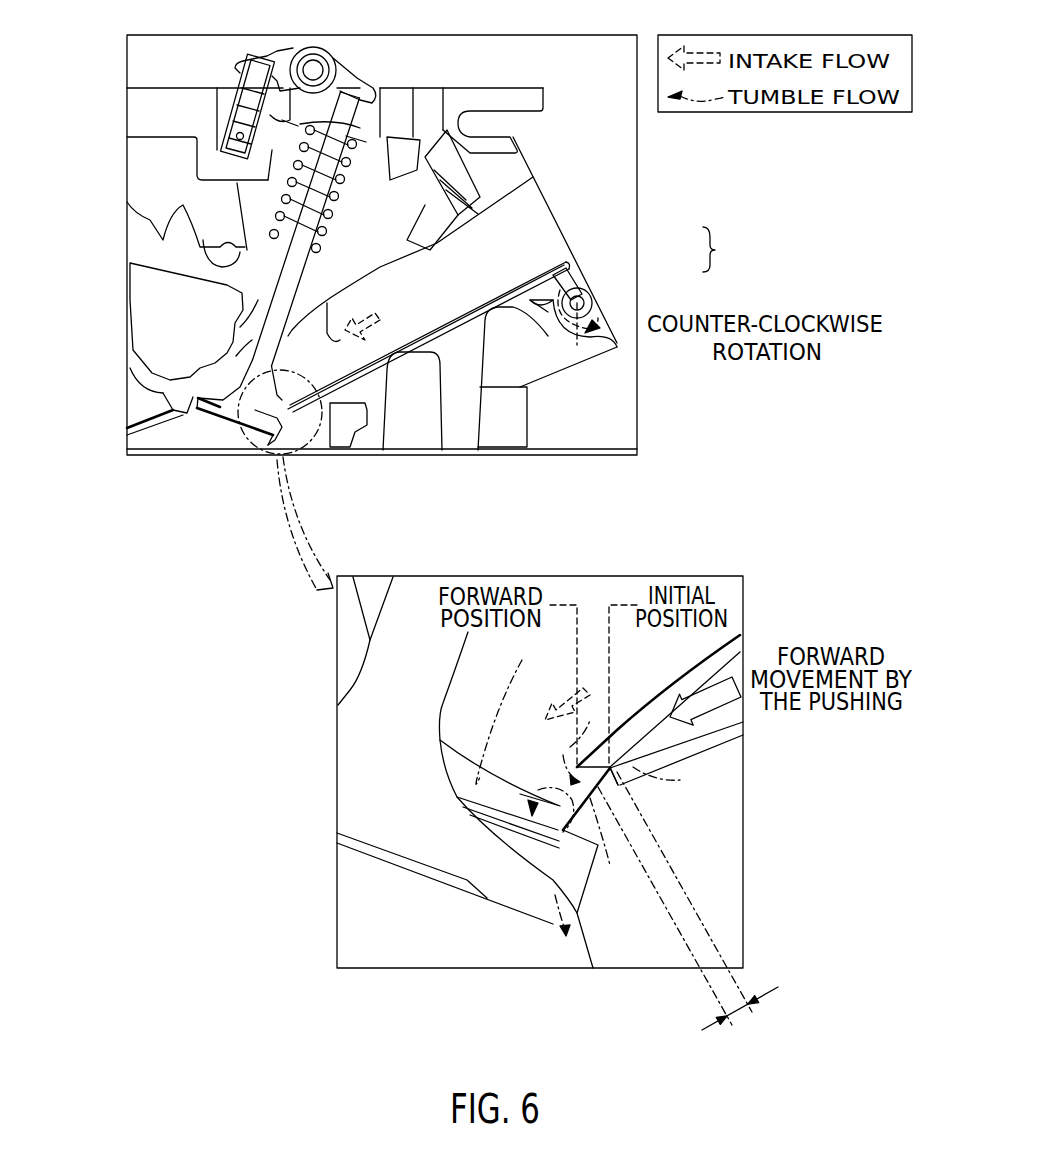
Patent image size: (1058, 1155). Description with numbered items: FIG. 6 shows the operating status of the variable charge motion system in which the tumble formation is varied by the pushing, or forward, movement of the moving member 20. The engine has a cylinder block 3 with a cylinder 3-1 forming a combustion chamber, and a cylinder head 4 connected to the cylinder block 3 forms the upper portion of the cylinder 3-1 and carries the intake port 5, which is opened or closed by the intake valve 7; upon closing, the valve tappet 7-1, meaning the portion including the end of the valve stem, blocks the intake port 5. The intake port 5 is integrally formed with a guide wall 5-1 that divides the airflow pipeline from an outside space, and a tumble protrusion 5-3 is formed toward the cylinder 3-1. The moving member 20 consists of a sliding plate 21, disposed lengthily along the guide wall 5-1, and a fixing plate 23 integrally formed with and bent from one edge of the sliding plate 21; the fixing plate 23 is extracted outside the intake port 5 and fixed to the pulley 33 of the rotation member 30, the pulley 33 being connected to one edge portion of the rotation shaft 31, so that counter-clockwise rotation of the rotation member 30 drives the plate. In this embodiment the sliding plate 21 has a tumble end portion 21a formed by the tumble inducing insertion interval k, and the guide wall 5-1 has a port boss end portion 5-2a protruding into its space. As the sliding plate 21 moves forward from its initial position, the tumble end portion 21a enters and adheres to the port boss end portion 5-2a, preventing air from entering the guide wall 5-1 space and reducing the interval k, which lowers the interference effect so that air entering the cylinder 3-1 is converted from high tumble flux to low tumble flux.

The cylinder block 3 is at (452, 428).
The cylinder 3-1 is at (183, 445).
The cylinder head 4 is at (160, 216).
The intake port 5 is at (522, 210).
The guide wall 5-1 is at (745, 640).
The port boss end portion 5-2a is at (600, 787).
The tumble protrusion 5-3 is at (587, 950).
The intake valve 7 is at (365, 80).
The valve tappet 7-1 is at (503, 945).
The moving member 20 is at (553, 498).
The sliding plate 21 is at (608, 248).
The tumble end portion 21a is at (630, 769).
The fixing plate 23 is at (590, 282).
The rotation member 30 is at (616, 417).
The rotation shaft 31 is at (577, 350).
The pulley 33 is at (600, 345).
The tumble inducing insertion interval k is at (740, 1017).